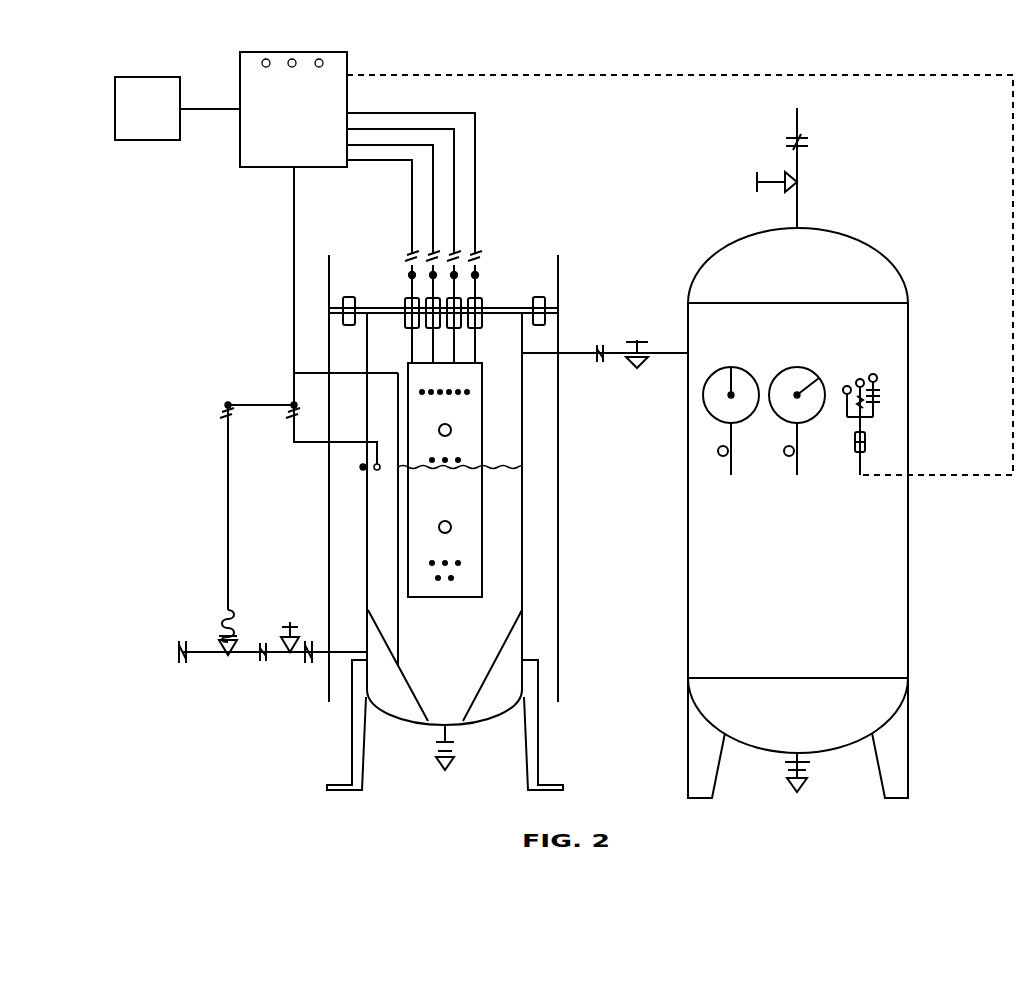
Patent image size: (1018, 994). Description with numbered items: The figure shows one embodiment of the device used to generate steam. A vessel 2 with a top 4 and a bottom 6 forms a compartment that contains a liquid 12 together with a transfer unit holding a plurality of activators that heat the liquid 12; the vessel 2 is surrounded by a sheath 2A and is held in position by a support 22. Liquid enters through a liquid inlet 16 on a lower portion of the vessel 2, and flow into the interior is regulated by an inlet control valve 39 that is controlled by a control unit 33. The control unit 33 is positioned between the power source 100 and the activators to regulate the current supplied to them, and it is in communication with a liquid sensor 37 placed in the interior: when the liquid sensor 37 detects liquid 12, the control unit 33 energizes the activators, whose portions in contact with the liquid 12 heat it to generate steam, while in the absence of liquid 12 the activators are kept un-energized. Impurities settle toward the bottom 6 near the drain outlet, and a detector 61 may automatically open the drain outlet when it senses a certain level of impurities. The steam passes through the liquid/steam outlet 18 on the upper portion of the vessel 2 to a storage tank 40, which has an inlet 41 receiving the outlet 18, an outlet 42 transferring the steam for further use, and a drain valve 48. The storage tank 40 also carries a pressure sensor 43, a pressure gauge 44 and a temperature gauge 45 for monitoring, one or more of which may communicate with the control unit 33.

The power source 100 is at (142, 150).
The control unit 33 is at (270, 174).
The top 4 is at (528, 253).
The vessel 2 is at (527, 522).
The sheath 2A is at (567, 473).
The liquid 12 is at (504, 577).
The bottom 6 is at (380, 713).
The detector 61 is at (399, 670).
The liquid sensor 37 is at (360, 469).
The inlet control valve 39 is at (219, 603).
The liquid inlet 16 is at (341, 663).
The support 22 is at (346, 775).
The liquid/steam outlet 18 is at (571, 366).
The storage tank 40 is at (912, 542).
The inlet 41 is at (707, 333).
The outlet 42 is at (806, 134).
The pressure sensor 43 is at (874, 445).
The pressure gauge 44 is at (742, 453).
The temperature gauge 45 is at (805, 453).
The drain valve 48 is at (813, 786).